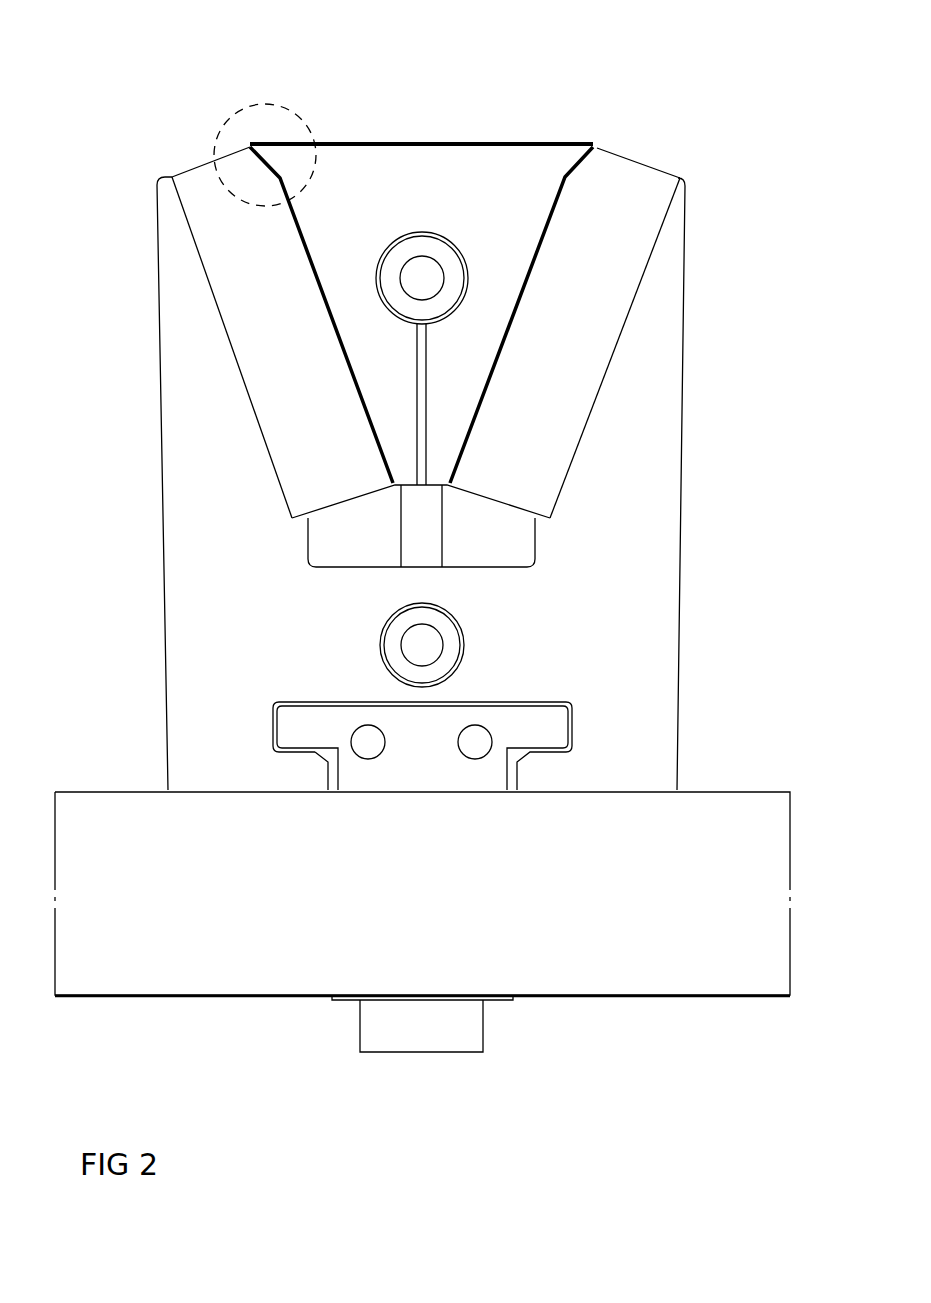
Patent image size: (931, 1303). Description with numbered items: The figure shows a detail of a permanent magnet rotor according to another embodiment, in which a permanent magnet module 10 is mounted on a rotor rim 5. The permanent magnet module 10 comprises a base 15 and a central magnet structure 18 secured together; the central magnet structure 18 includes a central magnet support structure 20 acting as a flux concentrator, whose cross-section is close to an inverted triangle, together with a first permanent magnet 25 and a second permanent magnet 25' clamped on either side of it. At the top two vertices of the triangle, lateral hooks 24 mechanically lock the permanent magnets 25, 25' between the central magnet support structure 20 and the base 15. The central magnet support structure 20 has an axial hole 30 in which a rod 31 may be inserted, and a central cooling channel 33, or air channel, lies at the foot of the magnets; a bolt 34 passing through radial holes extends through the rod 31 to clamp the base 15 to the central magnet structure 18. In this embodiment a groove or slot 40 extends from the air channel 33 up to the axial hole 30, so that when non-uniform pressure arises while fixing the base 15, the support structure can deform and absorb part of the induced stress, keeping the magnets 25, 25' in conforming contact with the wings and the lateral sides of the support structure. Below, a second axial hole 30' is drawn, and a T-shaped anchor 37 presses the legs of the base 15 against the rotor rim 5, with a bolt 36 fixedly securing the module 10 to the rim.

The rotor rim 5 is at (717, 792).
The permanent magnet module 10 is at (403, 556).
The base 15 is at (118, 457).
The central magnet structure 18 is at (420, 290).
The central magnet support structure 20 is at (455, 144).
The lateral hook 24 is at (287, 108).
The first permanent magnet 25 is at (586, 289).
The second permanent magnet 25' is at (255, 289).
The axial hole 30 is at (462, 240).
The lower cylindrical tube 30' is at (474, 639).
The rod 31 is at (423, 258).
The central cooling channel 33 is at (386, 504).
The bolt 34 is at (437, 540).
The bolt 36 is at (467, 1048).
The anchor 37 is at (530, 717).
The groove (slot) 40 is at (426, 420).